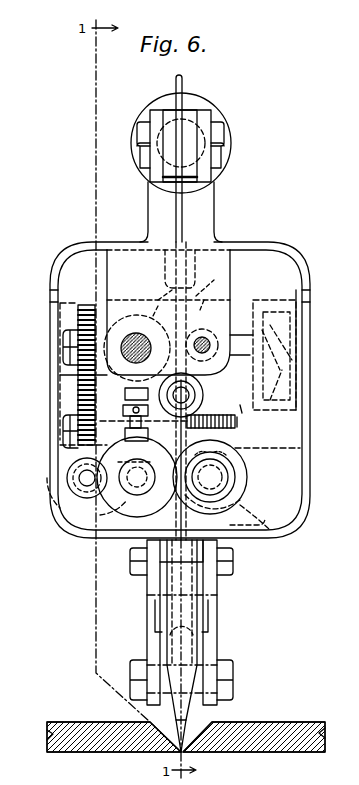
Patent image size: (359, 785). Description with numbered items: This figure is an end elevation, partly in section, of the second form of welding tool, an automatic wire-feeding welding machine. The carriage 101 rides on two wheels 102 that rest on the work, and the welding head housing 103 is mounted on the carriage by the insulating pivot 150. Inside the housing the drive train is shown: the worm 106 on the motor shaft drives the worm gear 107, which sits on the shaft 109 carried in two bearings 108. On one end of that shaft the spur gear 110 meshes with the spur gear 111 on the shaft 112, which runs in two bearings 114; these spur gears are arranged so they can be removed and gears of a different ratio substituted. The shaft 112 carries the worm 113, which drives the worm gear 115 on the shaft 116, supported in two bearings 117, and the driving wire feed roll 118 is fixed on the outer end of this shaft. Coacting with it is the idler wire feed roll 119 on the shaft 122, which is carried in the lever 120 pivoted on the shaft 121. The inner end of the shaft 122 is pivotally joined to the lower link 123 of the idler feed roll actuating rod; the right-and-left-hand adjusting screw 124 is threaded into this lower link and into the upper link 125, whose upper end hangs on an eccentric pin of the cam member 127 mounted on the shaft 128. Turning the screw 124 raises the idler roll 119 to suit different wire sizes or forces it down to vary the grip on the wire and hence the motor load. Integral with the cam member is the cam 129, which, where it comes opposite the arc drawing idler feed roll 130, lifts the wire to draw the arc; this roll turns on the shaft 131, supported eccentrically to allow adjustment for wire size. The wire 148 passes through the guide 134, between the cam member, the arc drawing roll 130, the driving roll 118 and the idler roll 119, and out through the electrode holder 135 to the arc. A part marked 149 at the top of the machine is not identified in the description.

The carriage 101 is at (210, 585).
The wheels 102 is at (194, 723).
The welding head housing 103 is at (72, 262).
The worm 106 is at (204, 389).
The worm gear 107 is at (199, 303).
The bearings 108 is at (104, 317).
The shaft 109 is at (240, 358).
The spur gear 110 is at (110, 369).
The spur gear 111 is at (108, 432).
The shaft 112 is at (244, 409).
The worm 113 is at (237, 424).
The bearings 114 is at (108, 440).
The worm gear 115 is at (263, 522).
The shaft 116 is at (213, 477).
The bearings 117 is at (248, 508).
The driving wire feed roll 118 is at (226, 489).
The idler wire feed roll 119 is at (130, 507).
The lever 120 is at (67, 513).
The shaft 121 is at (78, 481).
The shaft 122 is at (125, 482).
The lower link 123 is at (148, 431).
The adjusting screw 124 is at (124, 411).
The upper link 125 is at (126, 392).
The cam member 127 is at (112, 374).
The shaft 128 is at (121, 347).
The cam 129 is at (80, 312).
The arc drawing idler feed roll 130 is at (254, 342).
The shaft 131 is at (210, 339).
The guide 134 is at (194, 264).
The electrode holder 135 is at (194, 651).
The wire 148 is at (183, 88).
The head 149 is at (214, 113).
The insulating pivot 150 is at (233, 567).